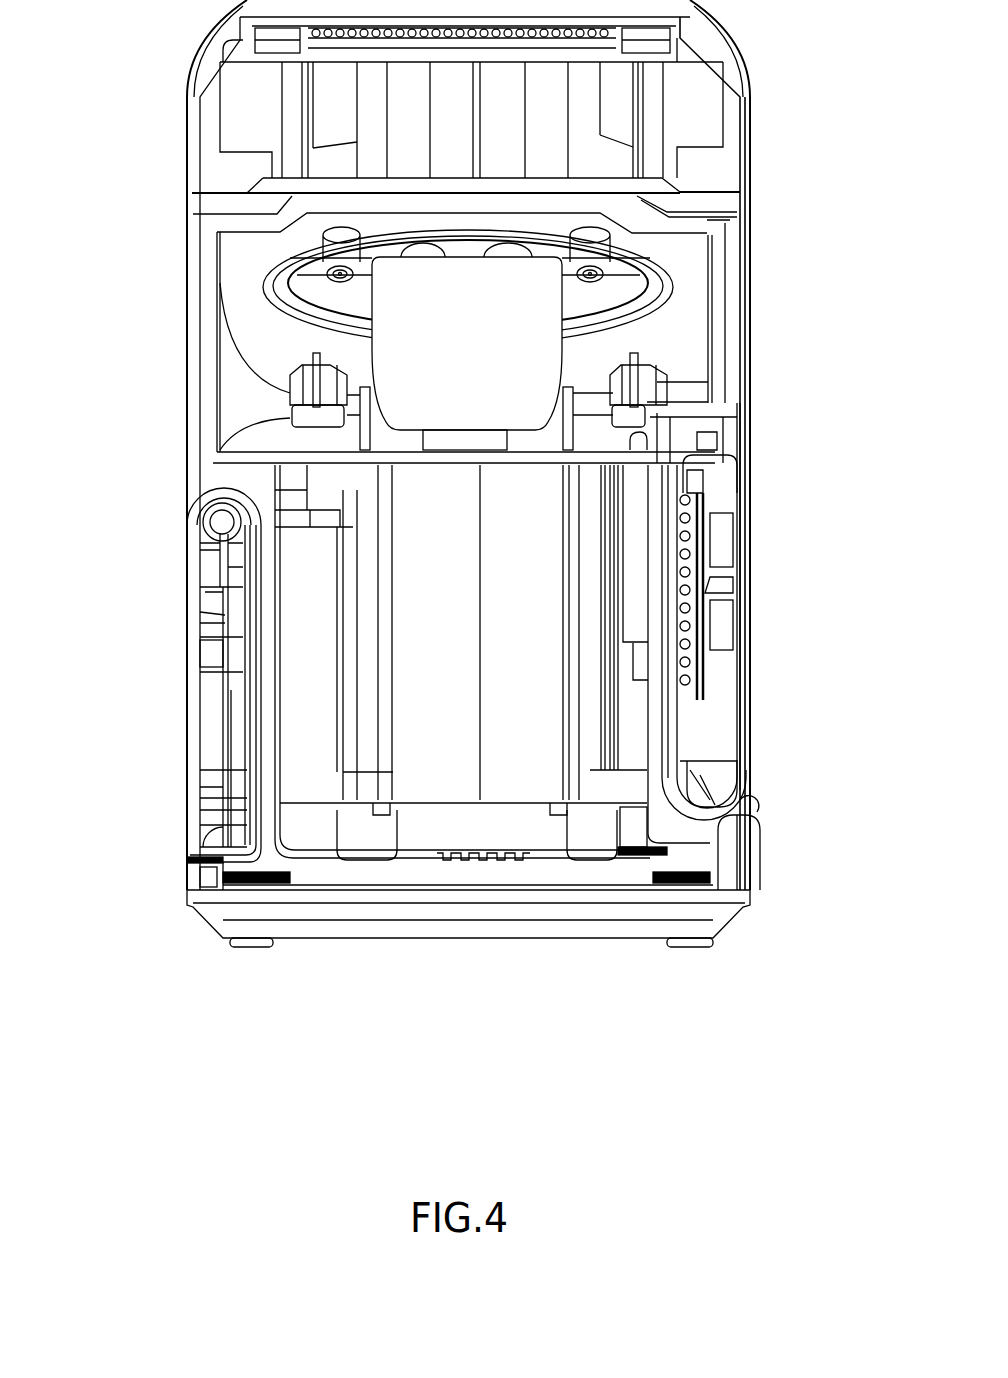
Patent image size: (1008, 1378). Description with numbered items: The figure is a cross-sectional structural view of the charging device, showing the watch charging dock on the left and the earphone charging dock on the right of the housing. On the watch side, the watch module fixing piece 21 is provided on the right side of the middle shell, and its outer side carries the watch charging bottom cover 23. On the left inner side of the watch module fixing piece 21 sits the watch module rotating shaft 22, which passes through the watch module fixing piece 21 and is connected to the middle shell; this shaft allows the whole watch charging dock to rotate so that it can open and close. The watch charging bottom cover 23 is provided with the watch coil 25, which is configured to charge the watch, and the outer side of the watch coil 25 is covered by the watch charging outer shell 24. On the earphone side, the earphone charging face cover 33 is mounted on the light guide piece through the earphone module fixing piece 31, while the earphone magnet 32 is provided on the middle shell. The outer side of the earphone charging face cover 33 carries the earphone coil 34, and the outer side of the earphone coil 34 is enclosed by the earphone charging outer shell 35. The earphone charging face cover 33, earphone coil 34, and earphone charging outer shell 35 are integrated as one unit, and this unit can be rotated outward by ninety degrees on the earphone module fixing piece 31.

The watch module fixing piece 21 is at (270, 680).
The watch module rotating shaft 22 is at (222, 521).
The watch charging bottom cover 23 is at (215, 811).
The watch charging outer shell 24 is at (195, 616).
The watch coil 25 is at (215, 736).
The earphone module fixing piece 31 is at (725, 820).
The earphone magnet 32 is at (637, 672).
The earphone charging face cover 33 is at (720, 755).
The earphone coil 34 is at (720, 654).
The earphone charging outer shell 35 is at (735, 496).